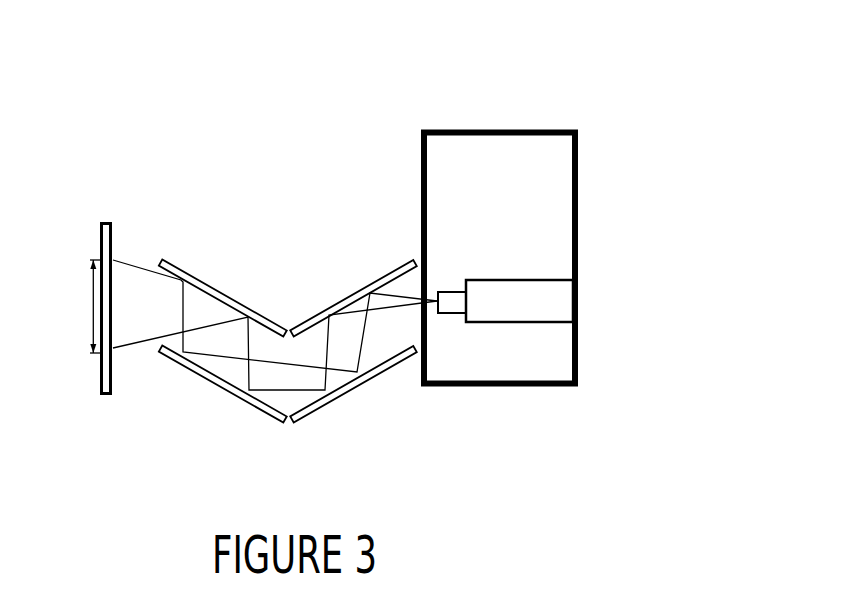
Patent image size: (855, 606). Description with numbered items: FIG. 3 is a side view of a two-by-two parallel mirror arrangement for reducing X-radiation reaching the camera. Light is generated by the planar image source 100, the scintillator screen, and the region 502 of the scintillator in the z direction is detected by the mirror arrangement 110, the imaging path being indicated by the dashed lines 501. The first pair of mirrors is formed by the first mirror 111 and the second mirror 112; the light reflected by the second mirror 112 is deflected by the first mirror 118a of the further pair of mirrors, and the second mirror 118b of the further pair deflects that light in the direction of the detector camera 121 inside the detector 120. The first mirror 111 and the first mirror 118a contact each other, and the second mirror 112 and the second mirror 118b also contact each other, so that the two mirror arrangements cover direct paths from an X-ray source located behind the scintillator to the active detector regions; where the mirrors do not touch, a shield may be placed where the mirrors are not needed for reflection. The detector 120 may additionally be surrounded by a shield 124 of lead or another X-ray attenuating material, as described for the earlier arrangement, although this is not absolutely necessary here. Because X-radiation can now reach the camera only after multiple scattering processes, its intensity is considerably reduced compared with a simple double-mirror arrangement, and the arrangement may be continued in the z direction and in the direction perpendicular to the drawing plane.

The planar image source 100 is at (103, 396).
The mirror arrangement 110 is at (291, 240).
The first mirror 111 is at (222, 292).
The second mirror 112 is at (218, 387).
The first mirror of the further pair of mirrors 118a is at (353, 293).
The second mirror of the further pair of mirrors 118b is at (358, 388).
The detector 120 is at (561, 204).
The detector camera 121 is at (567, 302).
The shield 124 is at (578, 210).
The dashed lines 501 is at (158, 338).
The region of the scintillator 502 is at (74, 306).